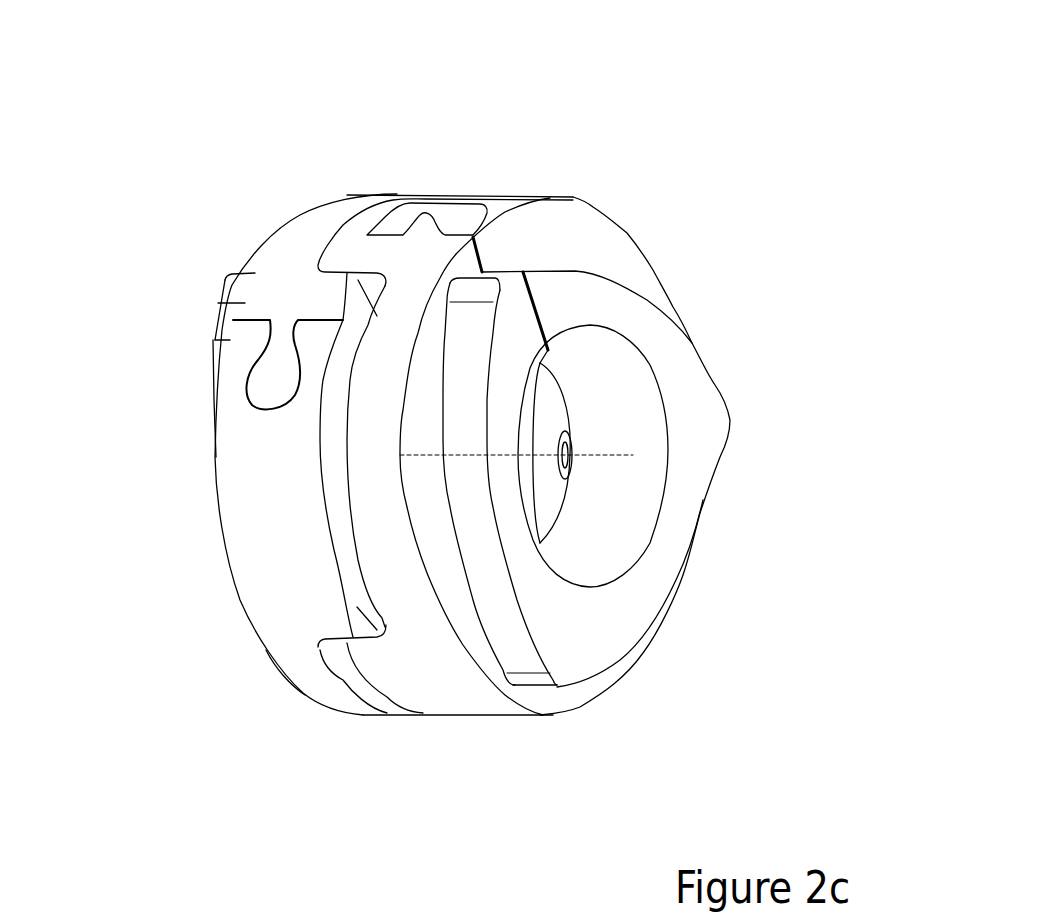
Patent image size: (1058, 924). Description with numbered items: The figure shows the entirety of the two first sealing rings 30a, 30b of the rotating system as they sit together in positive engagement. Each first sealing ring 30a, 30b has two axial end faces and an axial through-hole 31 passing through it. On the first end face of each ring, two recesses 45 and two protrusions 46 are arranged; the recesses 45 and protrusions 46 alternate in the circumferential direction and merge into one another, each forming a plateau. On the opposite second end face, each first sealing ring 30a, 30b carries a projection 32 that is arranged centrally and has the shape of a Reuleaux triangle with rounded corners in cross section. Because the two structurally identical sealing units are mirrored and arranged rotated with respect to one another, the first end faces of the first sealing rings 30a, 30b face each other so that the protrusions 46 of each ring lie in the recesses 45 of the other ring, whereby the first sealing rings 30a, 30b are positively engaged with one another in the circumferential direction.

The first sealing ring 30a is at (368, 197).
The first sealing ring 30b is at (570, 218).
The axial through-hole 31 is at (638, 430).
The projection 32 is at (223, 327).
The recess 45 is at (345, 243).
The protrusion 46 is at (390, 223).